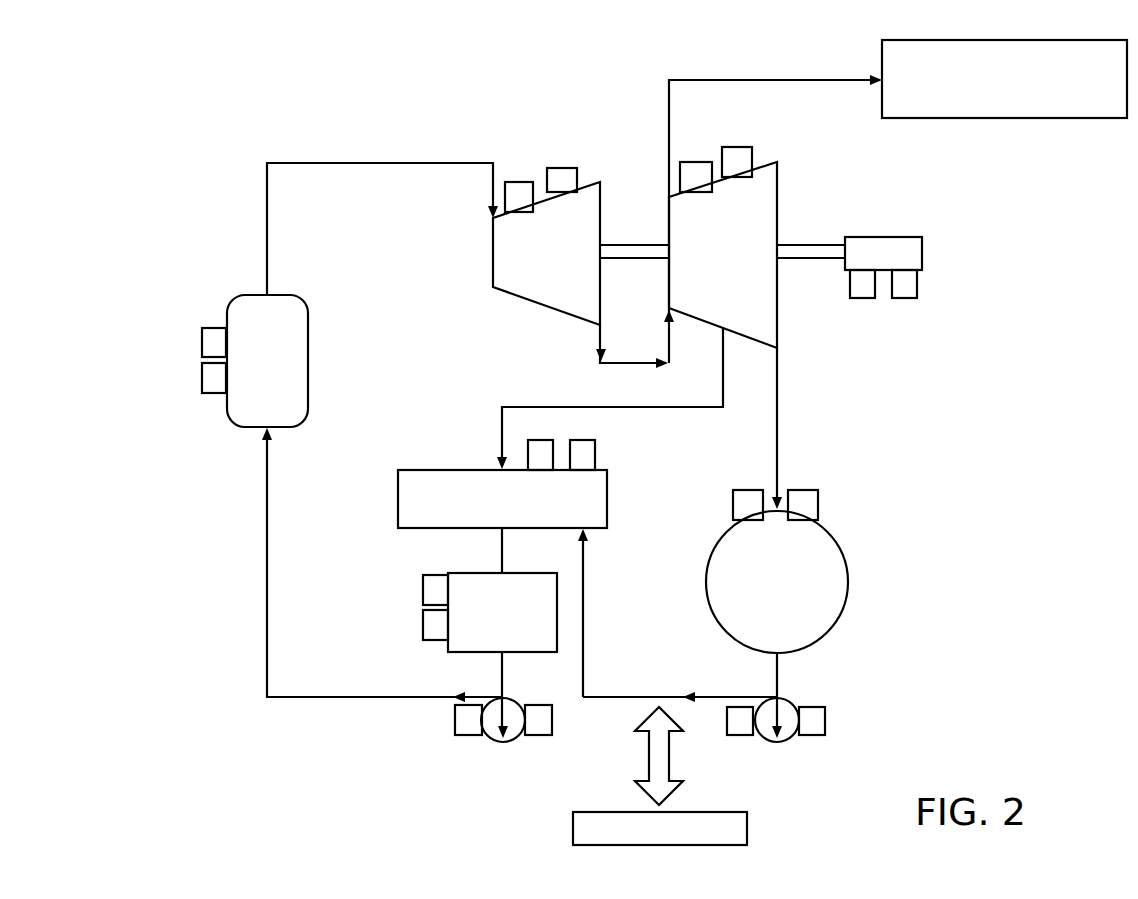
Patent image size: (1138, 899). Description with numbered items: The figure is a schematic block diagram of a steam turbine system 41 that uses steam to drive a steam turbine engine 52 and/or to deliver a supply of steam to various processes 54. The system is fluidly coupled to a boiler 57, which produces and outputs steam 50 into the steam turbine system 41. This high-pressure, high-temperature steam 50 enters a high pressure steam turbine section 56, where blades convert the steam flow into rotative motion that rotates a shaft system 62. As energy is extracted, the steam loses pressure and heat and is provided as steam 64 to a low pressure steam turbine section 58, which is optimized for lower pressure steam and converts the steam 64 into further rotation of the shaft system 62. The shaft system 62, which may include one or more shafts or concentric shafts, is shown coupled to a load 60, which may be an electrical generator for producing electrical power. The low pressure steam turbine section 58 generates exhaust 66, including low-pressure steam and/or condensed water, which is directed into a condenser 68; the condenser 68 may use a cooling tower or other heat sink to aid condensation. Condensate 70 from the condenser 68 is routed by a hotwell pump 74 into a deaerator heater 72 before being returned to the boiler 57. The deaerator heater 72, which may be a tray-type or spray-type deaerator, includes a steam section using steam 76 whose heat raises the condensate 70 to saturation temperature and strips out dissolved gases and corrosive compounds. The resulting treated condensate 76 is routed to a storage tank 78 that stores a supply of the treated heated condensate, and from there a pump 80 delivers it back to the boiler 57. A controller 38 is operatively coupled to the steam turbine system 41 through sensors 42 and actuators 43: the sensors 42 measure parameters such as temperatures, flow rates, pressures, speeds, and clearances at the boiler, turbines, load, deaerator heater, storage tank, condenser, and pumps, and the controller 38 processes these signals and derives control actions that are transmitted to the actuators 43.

The controller 38 is at (712, 812).
The steam turbine system 41 is at (200, 122).
The sensors 42 is at (562, 168).
The actuators 43 is at (518, 182).
The steam 50 is at (378, 163).
The steam turbine engine 52 is at (561, 220).
The processes 54 is at (1005, 118).
The high pressure steam turbine section 56 is at (548, 308).
The boiler 57 is at (242, 299).
The low pressure steam turbine section 58 is at (780, 193).
The load 60 is at (880, 237).
The shaft system 62 is at (612, 260).
The steam 64 is at (633, 365).
The exhaust 66 is at (780, 412).
The condenser 68 is at (848, 580).
The condensate 70 is at (585, 645).
The deaerator heater 72 is at (447, 470).
The hotwell pump 74 is at (790, 740).
The steam / treated condensate 76 is at (723, 370).
The storage tank 78 is at (514, 655).
The pump 80 is at (505, 742).